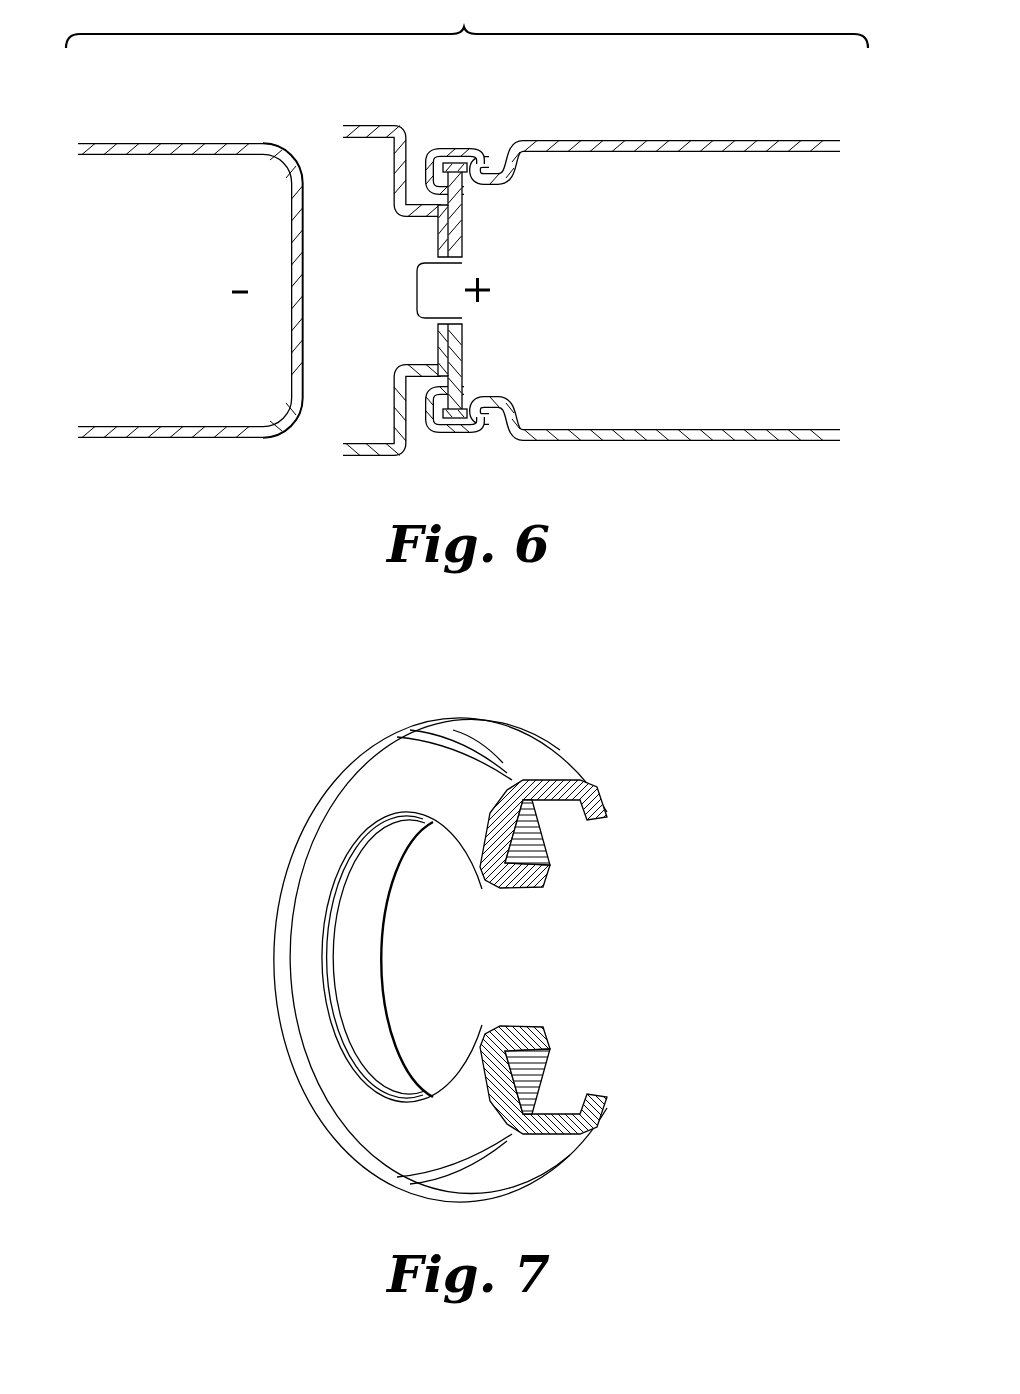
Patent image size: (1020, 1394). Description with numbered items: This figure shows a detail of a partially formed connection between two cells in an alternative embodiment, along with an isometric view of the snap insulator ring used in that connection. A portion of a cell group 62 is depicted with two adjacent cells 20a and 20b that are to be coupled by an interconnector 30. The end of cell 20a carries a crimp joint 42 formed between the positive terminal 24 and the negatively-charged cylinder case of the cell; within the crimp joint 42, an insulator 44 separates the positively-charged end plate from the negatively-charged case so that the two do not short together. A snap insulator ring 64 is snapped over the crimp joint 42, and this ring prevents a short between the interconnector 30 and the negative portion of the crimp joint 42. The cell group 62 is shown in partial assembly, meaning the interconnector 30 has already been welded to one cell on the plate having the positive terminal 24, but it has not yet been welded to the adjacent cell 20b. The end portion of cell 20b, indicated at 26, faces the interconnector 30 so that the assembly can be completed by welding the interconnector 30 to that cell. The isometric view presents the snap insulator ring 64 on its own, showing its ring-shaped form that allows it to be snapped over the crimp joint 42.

In FIG. 6, the cell group 62 is at (467, 26).
In FIG. 6, the cell 20a is at (678, 140).
In FIG. 6, the cell 20b is at (183, 143).
In FIG. 6, the end wall of second panel 26 is at (304, 385).
In FIG. 6, the interconnector 30 is at (378, 125).
In FIG. 6, the crimp joint 42 is at (500, 150).
In FIG. 6, the insulator 44 is at (465, 190).
In FIG. 6, the positive terminal 24 is at (417, 290).
In FIG. 6, the snap insulator ring 64 is at (458, 150).
In FIG. 7, the snap insulator ring 64 is at (303, 955).